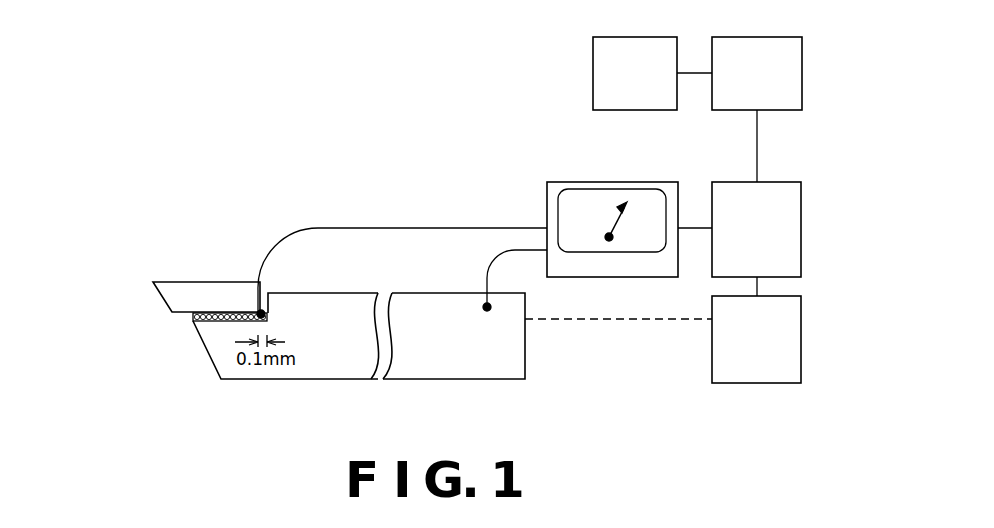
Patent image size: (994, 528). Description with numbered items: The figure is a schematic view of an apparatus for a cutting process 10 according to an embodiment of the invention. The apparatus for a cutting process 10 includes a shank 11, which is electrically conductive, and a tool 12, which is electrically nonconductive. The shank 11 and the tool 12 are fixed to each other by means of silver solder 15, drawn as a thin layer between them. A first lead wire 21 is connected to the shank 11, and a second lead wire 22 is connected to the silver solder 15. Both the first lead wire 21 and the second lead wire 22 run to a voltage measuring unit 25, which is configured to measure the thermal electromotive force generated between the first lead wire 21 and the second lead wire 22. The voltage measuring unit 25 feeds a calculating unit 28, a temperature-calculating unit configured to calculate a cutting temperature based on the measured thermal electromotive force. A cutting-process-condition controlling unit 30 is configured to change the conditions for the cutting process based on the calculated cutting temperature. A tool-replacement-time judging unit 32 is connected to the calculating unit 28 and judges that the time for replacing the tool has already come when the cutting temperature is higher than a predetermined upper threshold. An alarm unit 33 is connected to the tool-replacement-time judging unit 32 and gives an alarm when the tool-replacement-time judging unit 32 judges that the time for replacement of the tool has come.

The apparatus for a cutting process 10 is at (157, 298).
The shank 11 is at (527, 340).
The tool 12 is at (187, 282).
The silver solder 15 is at (225, 323).
The first lead wire 21 is at (487, 266).
The second lead wire 22 is at (345, 228).
The voltage measuring unit 25 is at (609, 182).
The calculating unit 28 is at (727, 182).
The cutting-process-condition controlling unit 30 is at (750, 384).
The tool-replacement-time judging unit 32 is at (757, 37).
The alarm unit 33 is at (632, 37).